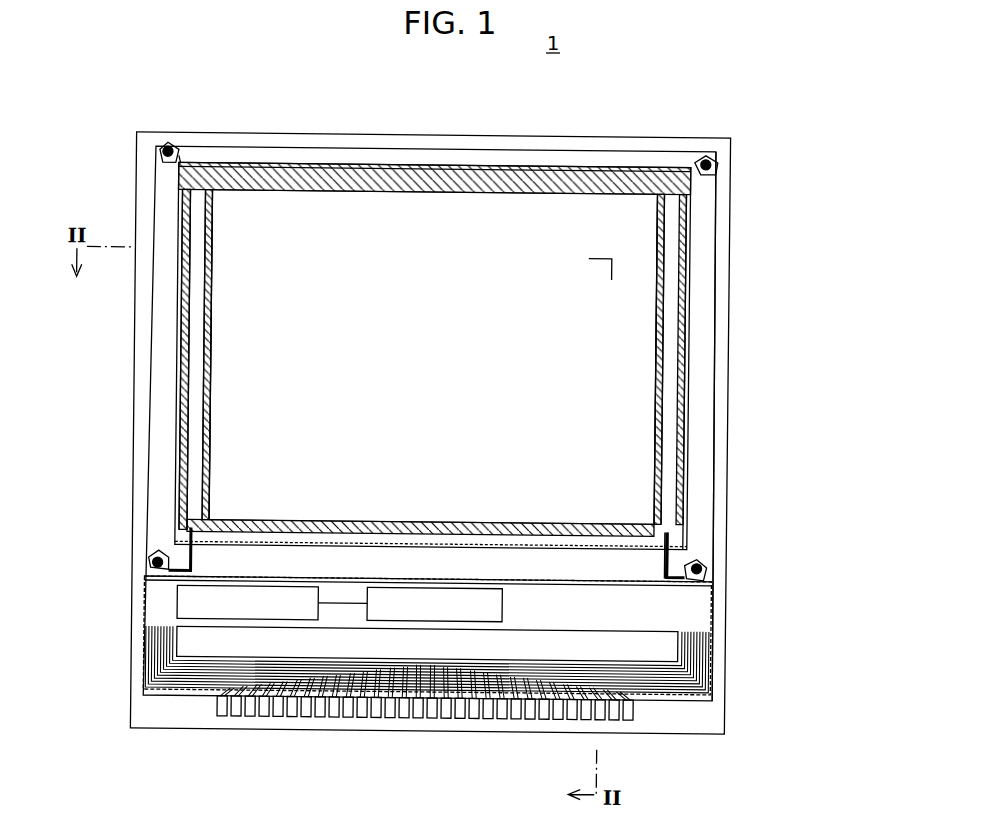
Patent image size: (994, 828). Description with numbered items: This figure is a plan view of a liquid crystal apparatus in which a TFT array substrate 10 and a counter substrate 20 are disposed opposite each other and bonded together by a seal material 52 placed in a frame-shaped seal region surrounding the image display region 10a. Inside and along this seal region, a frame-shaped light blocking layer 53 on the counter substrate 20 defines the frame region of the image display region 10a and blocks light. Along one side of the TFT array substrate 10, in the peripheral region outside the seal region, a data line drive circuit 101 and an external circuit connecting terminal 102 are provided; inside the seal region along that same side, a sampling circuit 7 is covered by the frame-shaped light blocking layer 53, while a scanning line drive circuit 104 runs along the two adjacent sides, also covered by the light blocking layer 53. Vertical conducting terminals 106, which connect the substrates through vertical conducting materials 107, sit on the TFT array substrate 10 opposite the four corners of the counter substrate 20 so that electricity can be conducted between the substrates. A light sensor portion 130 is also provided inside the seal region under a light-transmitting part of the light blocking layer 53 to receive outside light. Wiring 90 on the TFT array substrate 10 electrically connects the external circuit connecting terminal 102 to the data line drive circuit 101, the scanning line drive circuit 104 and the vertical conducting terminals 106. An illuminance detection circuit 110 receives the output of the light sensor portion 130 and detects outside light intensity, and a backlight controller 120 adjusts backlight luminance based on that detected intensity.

The TFT array substrate 10 is at (259, 136).
The image display region 10a is at (250, 345).
The counter substrate 20 is at (456, 149).
The seal material 52 is at (706, 298).
The frame-shaped light blocking layer 53 is at (668, 545).
The sampling circuit 7 is at (275, 531).
The scanning line drive circuit 104 is at (667, 395).
The light sensor portion 130 is at (190, 383).
The vertical conducting terminals 106 is at (171, 150).
The vertical conducting materials 107 is at (152, 573).
The illuminance detection circuit 110 is at (179, 604).
The backlight controller 120 is at (505, 603).
The wiring 90 is at (150, 663).
The data line drive circuit 101 is at (201, 649).
The external circuit connecting terminal 102 is at (390, 719).